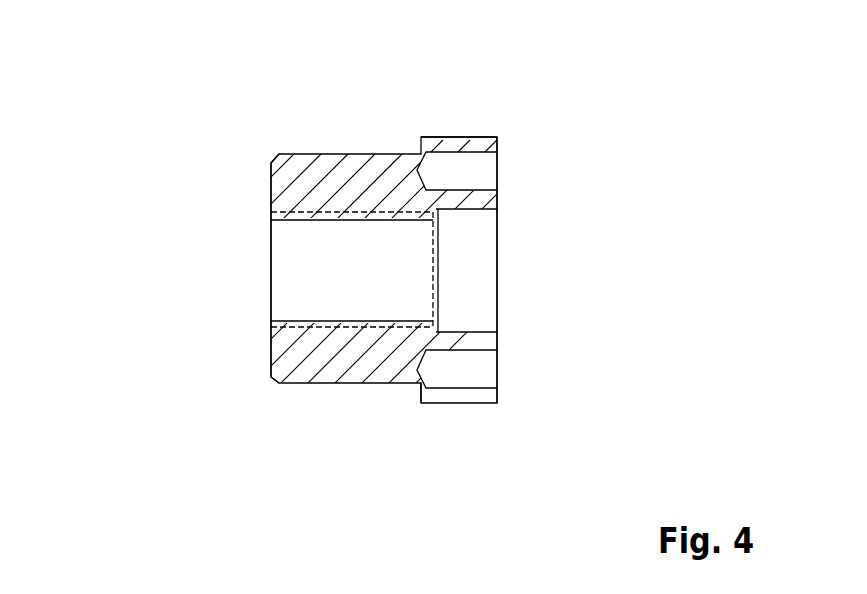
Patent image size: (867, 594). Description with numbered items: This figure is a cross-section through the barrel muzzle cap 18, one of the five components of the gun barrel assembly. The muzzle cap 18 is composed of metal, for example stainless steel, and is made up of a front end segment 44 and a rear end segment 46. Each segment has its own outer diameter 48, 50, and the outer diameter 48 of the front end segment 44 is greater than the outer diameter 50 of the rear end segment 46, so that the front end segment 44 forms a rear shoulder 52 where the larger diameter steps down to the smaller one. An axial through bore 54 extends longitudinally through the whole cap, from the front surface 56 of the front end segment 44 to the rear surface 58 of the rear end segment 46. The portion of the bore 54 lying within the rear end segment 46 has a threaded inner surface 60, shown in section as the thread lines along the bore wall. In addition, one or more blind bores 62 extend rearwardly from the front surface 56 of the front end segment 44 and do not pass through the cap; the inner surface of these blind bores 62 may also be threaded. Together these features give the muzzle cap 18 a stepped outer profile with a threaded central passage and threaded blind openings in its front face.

The barrel muzzle cap 18 is at (148, 220).
The front end segment 44 is at (462, 137).
The rear end segment 46 is at (272, 162).
The outer diameter of the front end segment 48 is at (447, 468).
The outer diameter of the rear end segment 50 is at (334, 452).
The rear shoulder 52 is at (420, 397).
The axial through bore 54 is at (343, 280).
The front surface 56 is at (497, 333).
The rear surface 58 is at (271, 355).
The threaded inner surface 60 is at (300, 321).
The blind bore 62 is at (480, 169).